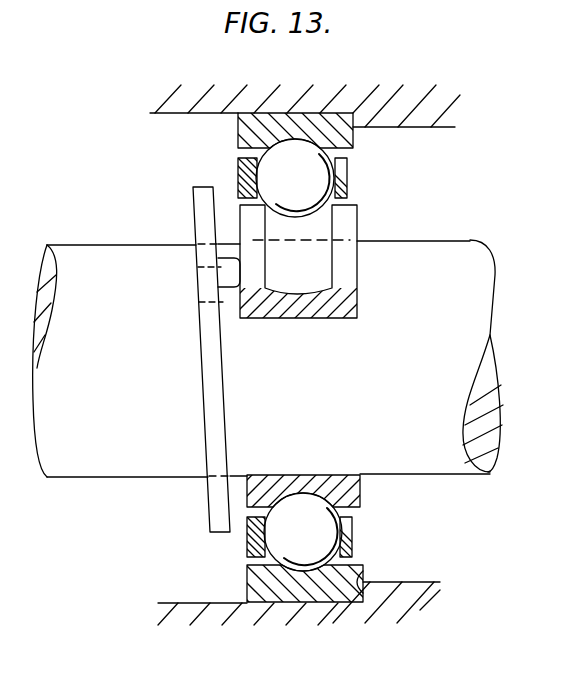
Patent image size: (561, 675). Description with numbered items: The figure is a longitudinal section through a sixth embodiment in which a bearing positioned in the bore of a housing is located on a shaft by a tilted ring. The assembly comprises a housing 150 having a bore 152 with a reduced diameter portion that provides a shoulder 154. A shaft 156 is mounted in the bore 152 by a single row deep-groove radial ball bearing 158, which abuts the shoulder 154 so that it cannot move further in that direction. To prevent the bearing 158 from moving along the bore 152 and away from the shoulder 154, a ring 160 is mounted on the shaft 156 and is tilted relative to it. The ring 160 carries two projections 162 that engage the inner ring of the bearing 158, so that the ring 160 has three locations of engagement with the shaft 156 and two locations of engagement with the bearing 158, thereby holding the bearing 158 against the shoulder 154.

The housing 150 is at (397, 103).
The bore 152 is at (200, 116).
The shoulder 154 is at (360, 567).
The shaft 156 is at (472, 248).
The single row deep-groove radial ball bearing 158 is at (368, 192).
The ring 160 is at (212, 507).
The projections 162 is at (228, 275).